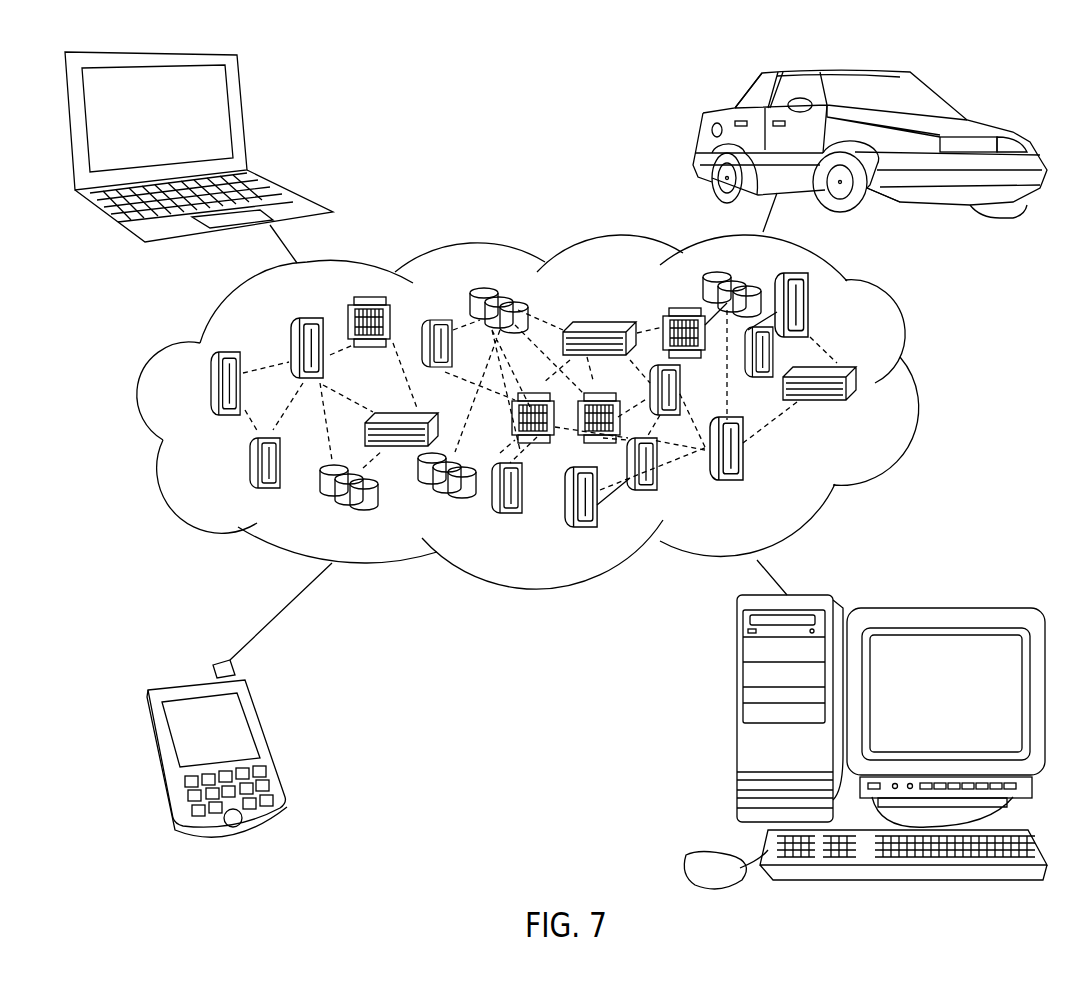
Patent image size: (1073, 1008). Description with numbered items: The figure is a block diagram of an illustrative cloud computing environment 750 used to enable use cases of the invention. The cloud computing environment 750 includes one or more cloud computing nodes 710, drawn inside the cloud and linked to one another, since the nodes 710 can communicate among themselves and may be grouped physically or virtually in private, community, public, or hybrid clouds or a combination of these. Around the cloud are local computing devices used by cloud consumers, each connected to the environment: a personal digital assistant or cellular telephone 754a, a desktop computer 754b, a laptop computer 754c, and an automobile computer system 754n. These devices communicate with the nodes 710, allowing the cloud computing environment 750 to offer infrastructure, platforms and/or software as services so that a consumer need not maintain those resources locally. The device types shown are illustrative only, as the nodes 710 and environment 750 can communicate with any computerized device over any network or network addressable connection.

The cloud computing nodes 710 is at (873, 405).
The cloud computing environment 750 is at (903, 318).
The personal digital assistant (PDA) or cellular telephone 754a is at (265, 733).
The desktop computer 754b is at (737, 723).
The laptop computer 754c is at (242, 107).
The automobile computer system 754n is at (707, 117).